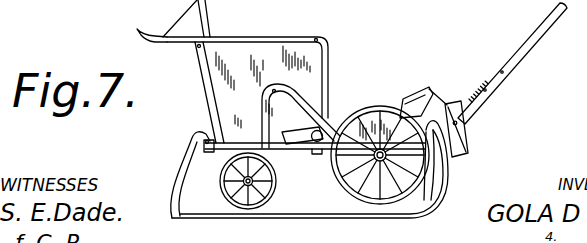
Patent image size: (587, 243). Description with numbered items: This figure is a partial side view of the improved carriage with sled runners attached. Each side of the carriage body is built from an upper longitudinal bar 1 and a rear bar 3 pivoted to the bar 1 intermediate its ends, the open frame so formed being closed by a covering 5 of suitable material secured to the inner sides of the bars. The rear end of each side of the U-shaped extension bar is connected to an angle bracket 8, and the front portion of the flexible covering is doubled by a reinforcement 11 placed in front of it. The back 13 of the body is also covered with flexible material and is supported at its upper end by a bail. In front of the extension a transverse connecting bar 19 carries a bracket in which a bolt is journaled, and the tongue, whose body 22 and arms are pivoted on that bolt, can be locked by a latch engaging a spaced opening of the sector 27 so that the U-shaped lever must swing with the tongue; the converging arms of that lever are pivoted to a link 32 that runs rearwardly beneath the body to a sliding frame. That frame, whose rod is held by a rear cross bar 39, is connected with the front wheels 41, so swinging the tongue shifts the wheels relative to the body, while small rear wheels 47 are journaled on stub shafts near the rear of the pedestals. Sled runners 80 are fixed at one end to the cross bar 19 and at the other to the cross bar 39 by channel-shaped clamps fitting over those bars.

The upper longitudinal bar 1 is at (283, 23).
The rear bar 3 is at (206, 96).
The covering 5 is at (306, 80).
The angle bracket 8 is at (402, 106).
The reinforcement 11 is at (430, 100).
The back 13 is at (206, 19).
The connecting bar 19 is at (443, 157).
The tongue body 22 is at (535, 43).
The sector 27 is at (459, 104).
The link 32 is at (466, 140).
The cross bar 39 is at (195, 175).
The front wheels 41 is at (350, 197).
The rear wheels 47 is at (273, 190).
The sled runners 80 is at (306, 218).